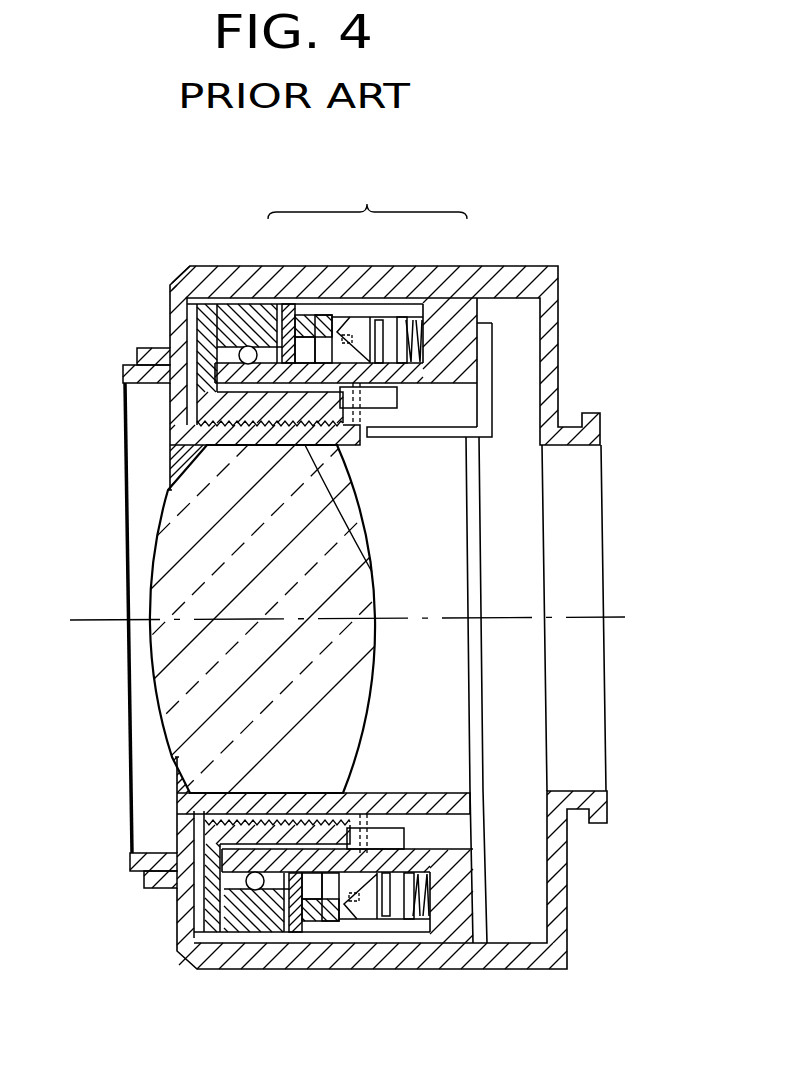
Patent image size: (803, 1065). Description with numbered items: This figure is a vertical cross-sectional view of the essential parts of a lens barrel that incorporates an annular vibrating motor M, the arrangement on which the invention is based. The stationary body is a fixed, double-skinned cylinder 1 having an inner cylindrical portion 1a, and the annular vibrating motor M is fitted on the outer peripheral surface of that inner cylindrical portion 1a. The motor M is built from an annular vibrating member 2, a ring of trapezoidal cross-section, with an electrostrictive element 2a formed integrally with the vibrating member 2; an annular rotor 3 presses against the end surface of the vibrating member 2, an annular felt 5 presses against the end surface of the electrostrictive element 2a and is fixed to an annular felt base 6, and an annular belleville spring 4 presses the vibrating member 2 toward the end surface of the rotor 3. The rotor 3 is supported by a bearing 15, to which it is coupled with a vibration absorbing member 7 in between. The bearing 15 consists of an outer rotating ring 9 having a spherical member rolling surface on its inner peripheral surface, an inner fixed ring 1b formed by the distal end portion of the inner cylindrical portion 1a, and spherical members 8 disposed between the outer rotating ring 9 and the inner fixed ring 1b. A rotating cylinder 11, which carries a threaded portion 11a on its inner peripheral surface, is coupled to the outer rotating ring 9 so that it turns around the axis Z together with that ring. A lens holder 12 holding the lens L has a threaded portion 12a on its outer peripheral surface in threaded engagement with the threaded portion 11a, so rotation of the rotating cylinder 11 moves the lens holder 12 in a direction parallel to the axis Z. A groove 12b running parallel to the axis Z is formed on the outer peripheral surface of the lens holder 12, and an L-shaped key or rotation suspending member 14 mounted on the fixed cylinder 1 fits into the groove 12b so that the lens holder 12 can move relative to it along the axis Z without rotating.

The fixed cylinder 1 is at (540, 277).
The inner cylindrical portion 1a is at (397, 387).
The inner fixed ring 1b is at (208, 346).
The annular vibrating member 2 is at (340, 312).
The electrostrictive element 2a is at (352, 322).
The annular rotor 3 is at (300, 310).
The annular belleville spring 4 is at (428, 322).
The annular felt 5 is at (399, 318).
The annular felt base 6 is at (428, 318).
The vibration absorbing member 7 is at (265, 310).
The spherical members 8 is at (236, 349).
The outer rotating ring 9 is at (188, 271).
The rotating cylinder 11 is at (203, 402).
The threaded portion 11a is at (170, 490).
The lens holder 12 is at (167, 369).
The threaded portion 12a is at (372, 572).
The groove 12b is at (364, 447).
The key or rotation suspending member 14 is at (495, 433).
The bearing 15 is at (233, 308).
The lens L is at (173, 683).
The annular vibrating motor M is at (367, 198).
The axis Z is at (617, 619).